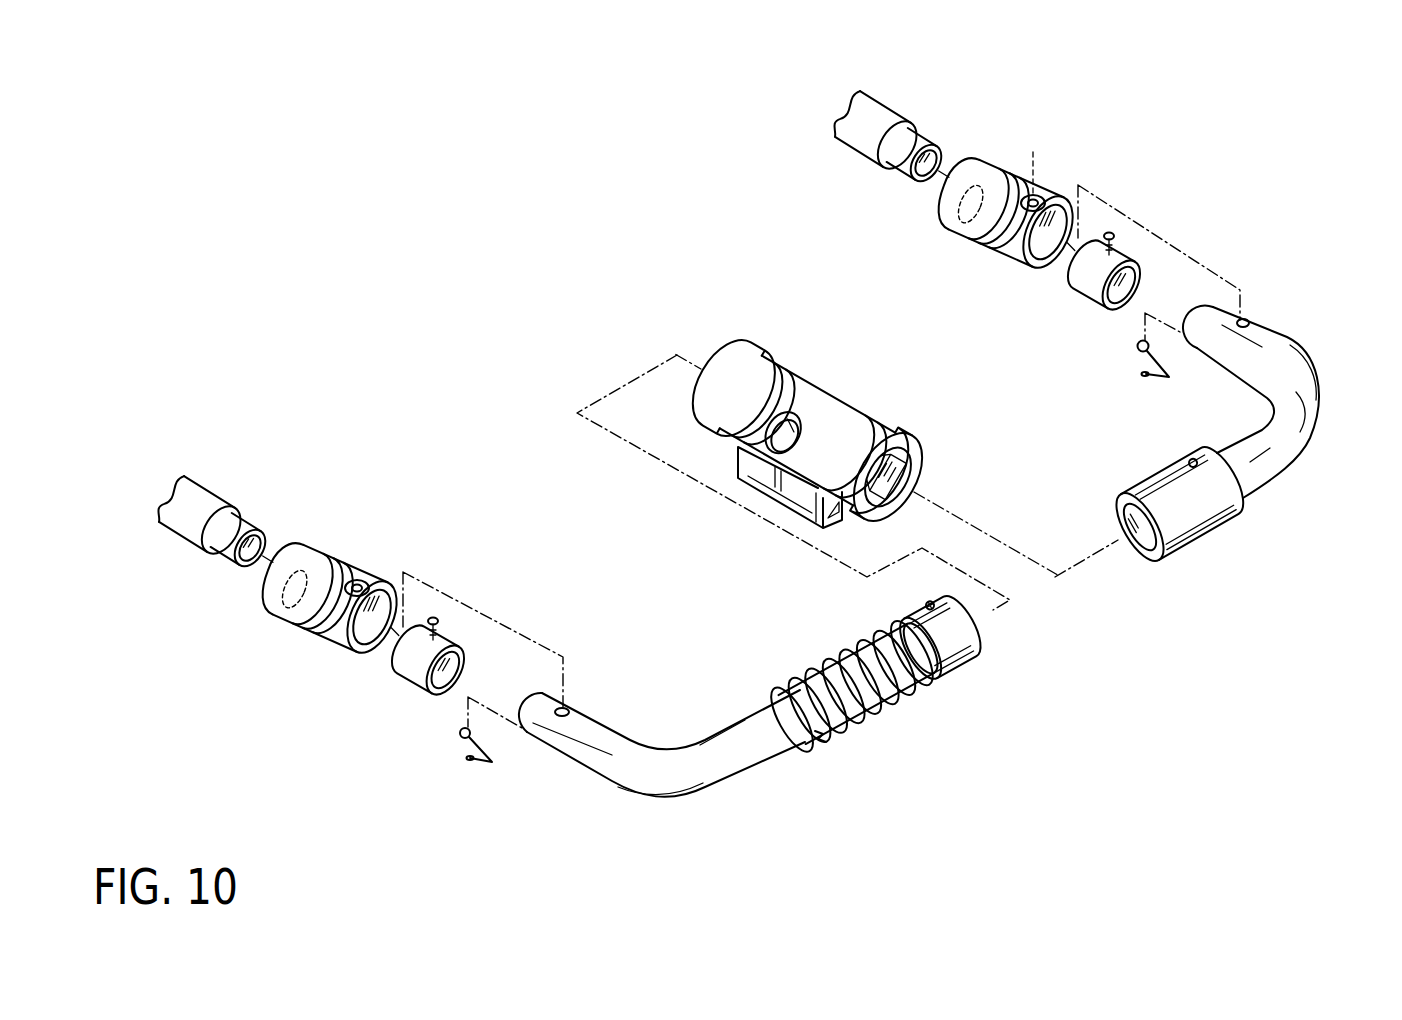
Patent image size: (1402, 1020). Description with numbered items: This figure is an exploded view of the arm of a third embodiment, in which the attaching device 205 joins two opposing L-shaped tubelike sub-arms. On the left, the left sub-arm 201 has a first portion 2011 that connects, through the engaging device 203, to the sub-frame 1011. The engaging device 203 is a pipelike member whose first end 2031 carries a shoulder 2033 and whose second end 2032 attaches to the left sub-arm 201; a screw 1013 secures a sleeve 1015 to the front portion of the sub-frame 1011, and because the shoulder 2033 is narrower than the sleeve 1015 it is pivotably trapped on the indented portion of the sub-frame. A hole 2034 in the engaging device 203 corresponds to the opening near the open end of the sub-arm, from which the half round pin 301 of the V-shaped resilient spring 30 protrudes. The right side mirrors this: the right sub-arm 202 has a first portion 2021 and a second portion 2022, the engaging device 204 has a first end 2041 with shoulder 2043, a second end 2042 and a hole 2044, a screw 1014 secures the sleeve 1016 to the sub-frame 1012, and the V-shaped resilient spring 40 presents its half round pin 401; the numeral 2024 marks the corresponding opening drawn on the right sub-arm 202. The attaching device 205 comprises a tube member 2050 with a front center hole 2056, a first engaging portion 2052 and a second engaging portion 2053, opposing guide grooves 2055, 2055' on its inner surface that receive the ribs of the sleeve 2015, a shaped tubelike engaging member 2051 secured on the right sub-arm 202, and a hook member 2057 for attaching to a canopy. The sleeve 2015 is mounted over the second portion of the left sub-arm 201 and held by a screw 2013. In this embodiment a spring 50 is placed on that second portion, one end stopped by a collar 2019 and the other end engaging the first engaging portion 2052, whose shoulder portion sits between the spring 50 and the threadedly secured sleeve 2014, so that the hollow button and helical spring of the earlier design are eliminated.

The left sub-arm 201 is at (803, 734).
The first portion of left sub-arm 2011 is at (632, 750).
The screw 2013 is at (943, 598).
The threadedly secured sleeve 2014 is at (568, 710).
The sleeve 2015 is at (957, 650).
The collar 2019 is at (823, 742).
The spring 50 is at (850, 652).
The V-shaped resilient spring 30 is at (485, 770).
The half round pin 301 is at (461, 736).
The engaging device 203 is at (330, 605).
The first end of engaging device 2031 is at (310, 547).
The second end of engaging device 2032 is at (380, 620).
The shoulder 2033 is at (273, 587).
The hole 2034 is at (360, 583).
The sub-frame 1011 is at (240, 527).
The screw 1013 is at (433, 617).
The sleeve 1015 is at (408, 675).
The attaching device 205 is at (831, 379).
The tube member 2050 is at (820, 410).
The first engaging portion 2052 is at (733, 357).
The second engaging portion 2053 is at (893, 417).
The guide groove 2055 is at (927, 476).
The guide groove 2055' is at (946, 455).
The front center hole 2056 is at (777, 433).
The hook member 2057 is at (773, 487).
The engaging device 204 is at (988, 224).
The first end of engaging device 2041 is at (977, 163).
The second end of engaging device 2042 is at (993, 248).
The shoulder 2043 is at (947, 200).
The hole 2044 is at (1040, 190).
The sub-frame 1012 is at (868, 147).
The screw 1014 is at (1112, 233).
The sleeve 1016 is at (1085, 288).
The right sub-arm 202 is at (1249, 419).
The first portion of right sub-arm 2021 is at (1287, 337).
The second portion of right sub-arm 2022 is at (1257, 477).
The hole of second handle 2024 is at (1245, 323).
The shaped tubelike engaging member 2051 is at (1213, 510).
The V-shaped resilient spring 40 is at (1162, 380).
The half round pin 401 is at (1150, 343).